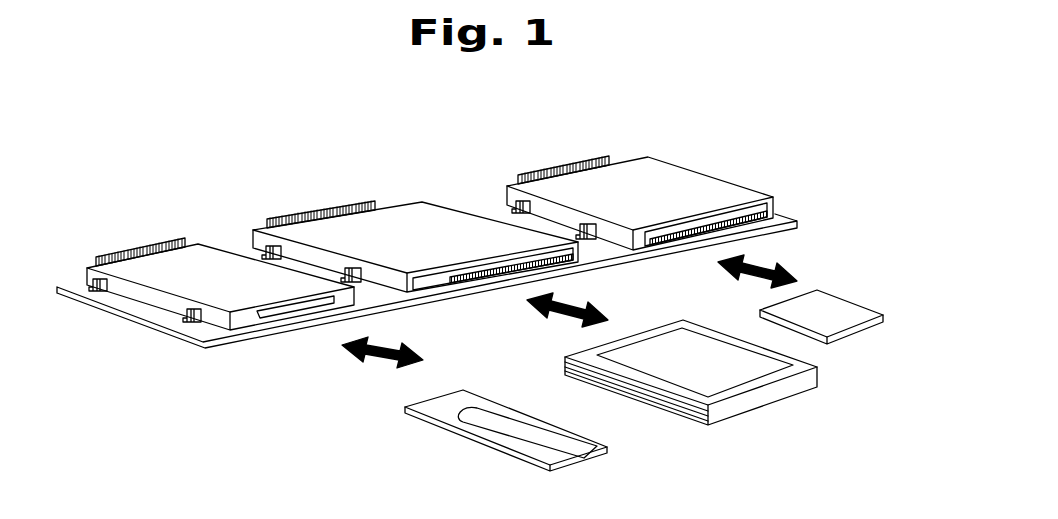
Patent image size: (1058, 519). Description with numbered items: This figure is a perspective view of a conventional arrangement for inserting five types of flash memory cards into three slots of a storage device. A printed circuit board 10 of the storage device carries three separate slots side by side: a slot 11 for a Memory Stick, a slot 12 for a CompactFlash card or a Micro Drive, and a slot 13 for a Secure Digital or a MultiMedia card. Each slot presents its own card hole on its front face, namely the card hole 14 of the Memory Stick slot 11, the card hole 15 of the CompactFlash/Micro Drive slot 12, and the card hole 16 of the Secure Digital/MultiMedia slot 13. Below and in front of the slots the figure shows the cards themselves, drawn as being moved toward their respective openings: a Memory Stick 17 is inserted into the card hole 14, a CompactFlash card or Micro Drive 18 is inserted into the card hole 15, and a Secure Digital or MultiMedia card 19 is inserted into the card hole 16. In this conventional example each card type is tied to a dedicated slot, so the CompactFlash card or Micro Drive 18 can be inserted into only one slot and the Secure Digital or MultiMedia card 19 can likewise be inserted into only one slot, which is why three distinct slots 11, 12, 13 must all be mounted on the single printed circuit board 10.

The printed circuit board 10 is at (142, 318).
The slot for Memory Stick 11 is at (137, 247).
The slot for CompactFlash card or Micro Drive 12 is at (407, 213).
The slot for Secure Digital or MultiMedia card 13 is at (648, 172).
The card hole 14 is at (282, 308).
The card hole 15 is at (440, 277).
The card hole 16 is at (667, 230).
The Memory Stick 17 is at (557, 450).
The CompactFlash card or Micro Drive 18 is at (733, 376).
The Secure Digital or MultiMedia card 19 is at (810, 313).